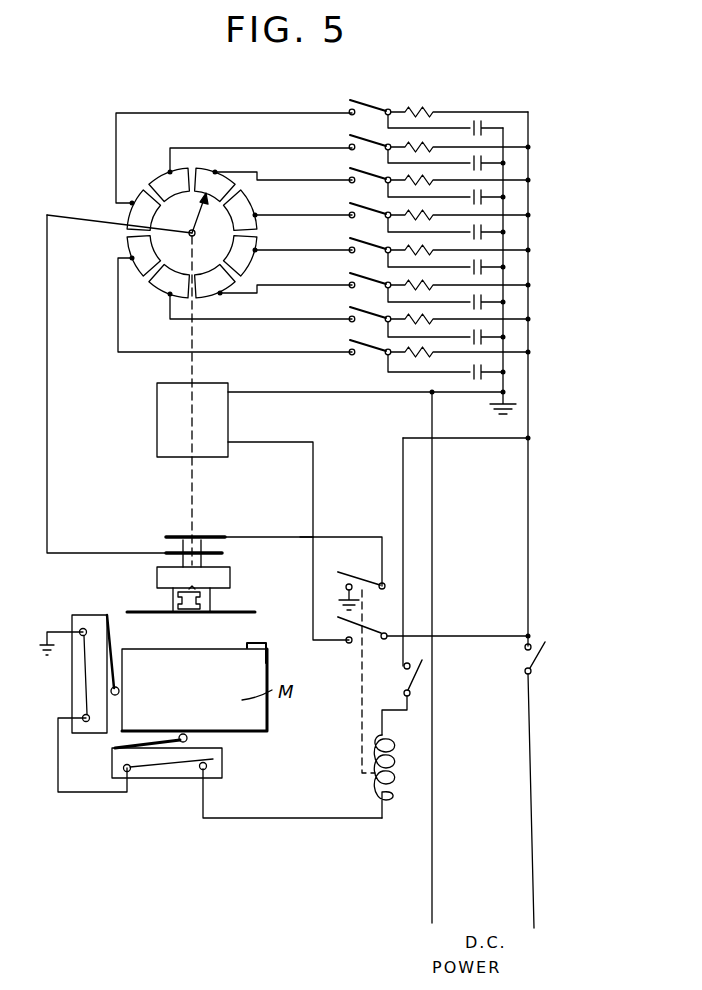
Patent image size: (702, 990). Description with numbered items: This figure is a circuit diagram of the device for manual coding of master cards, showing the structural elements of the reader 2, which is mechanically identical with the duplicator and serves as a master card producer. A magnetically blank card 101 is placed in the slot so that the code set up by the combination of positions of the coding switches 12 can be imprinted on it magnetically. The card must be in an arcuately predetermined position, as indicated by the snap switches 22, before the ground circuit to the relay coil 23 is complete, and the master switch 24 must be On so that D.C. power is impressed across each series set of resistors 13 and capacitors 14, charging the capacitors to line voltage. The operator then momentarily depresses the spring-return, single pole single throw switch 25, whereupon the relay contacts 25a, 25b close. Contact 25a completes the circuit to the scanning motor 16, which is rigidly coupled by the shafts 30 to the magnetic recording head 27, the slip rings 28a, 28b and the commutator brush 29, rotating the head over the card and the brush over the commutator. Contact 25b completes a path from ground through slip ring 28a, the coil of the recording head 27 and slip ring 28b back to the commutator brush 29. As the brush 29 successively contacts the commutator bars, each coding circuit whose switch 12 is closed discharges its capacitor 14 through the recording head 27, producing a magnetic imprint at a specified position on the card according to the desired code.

The reader 2 is at (113, 158).
The coding switches 12 is at (373, 103).
The resistors 13 is at (417, 362).
The capacitors 14 is at (483, 377).
The scanning motor 16 is at (157, 413).
The snap switches 22 is at (70, 688).
The relay coil 23 is at (392, 777).
The master switch 24 is at (545, 668).
The switch 25 is at (411, 676).
The relay contact 25a is at (350, 572).
The relay contact 25b is at (360, 630).
The magnetic recording head 27 is at (172, 603).
The slip ring 28a is at (170, 535).
The slip ring 28b is at (166, 551).
The commutator brush 29 is at (200, 216).
The shafts 30 is at (194, 500).
The magnetically blank card 101 is at (232, 611).